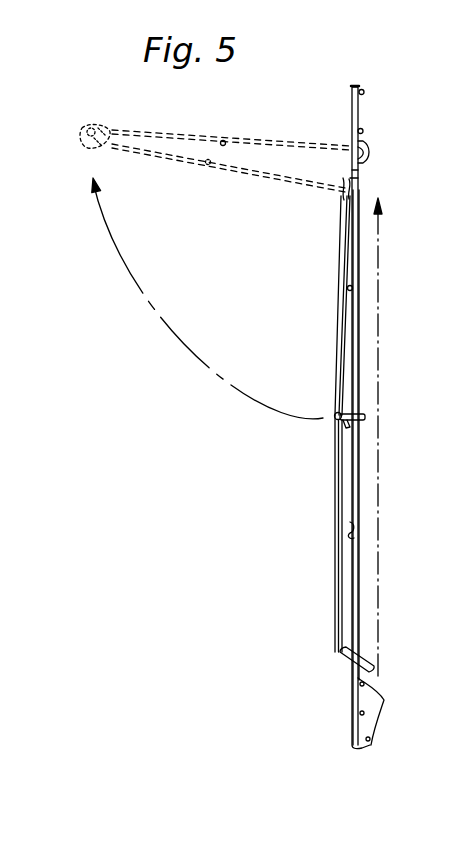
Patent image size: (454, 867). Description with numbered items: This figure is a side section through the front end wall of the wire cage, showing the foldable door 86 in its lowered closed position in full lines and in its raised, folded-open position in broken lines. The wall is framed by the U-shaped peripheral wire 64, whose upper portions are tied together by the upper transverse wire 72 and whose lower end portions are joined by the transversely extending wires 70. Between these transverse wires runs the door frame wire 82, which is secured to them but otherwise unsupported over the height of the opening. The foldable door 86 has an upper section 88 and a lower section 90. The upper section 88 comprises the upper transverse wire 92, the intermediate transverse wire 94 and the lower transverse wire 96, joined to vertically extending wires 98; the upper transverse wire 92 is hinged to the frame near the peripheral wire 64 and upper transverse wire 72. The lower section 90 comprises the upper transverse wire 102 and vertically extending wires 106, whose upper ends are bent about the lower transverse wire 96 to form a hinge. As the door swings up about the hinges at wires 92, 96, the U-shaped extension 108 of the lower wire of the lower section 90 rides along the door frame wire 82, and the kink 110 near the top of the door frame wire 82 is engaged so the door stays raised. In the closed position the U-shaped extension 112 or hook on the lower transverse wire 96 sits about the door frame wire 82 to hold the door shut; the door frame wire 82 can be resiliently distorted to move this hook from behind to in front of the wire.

The peripheral wire 64 is at (364, 91).
The upper transverse wire 72 is at (363, 131).
The upper transverse wire of the upper door section 92 is at (369, 152).
The kink 110 is at (362, 191).
The upper section 88 is at (345, 305).
The intermediate transverse wire 94 is at (353, 296).
The vertically extending wires 98 is at (340, 322).
The door frame wire 82 is at (360, 335).
The lower transverse wire 96 is at (337, 412).
The U-shaped extension 112 is at (366, 418).
The foldable door 86 is at (228, 437).
The lower section 90 is at (346, 533).
The upper transverse wire of the lower door section 102 is at (352, 523).
The vertically extending wires 106 is at (337, 593).
The U-shaped extension 108 is at (373, 668).
The transversely extending wires 70 is at (381, 698).